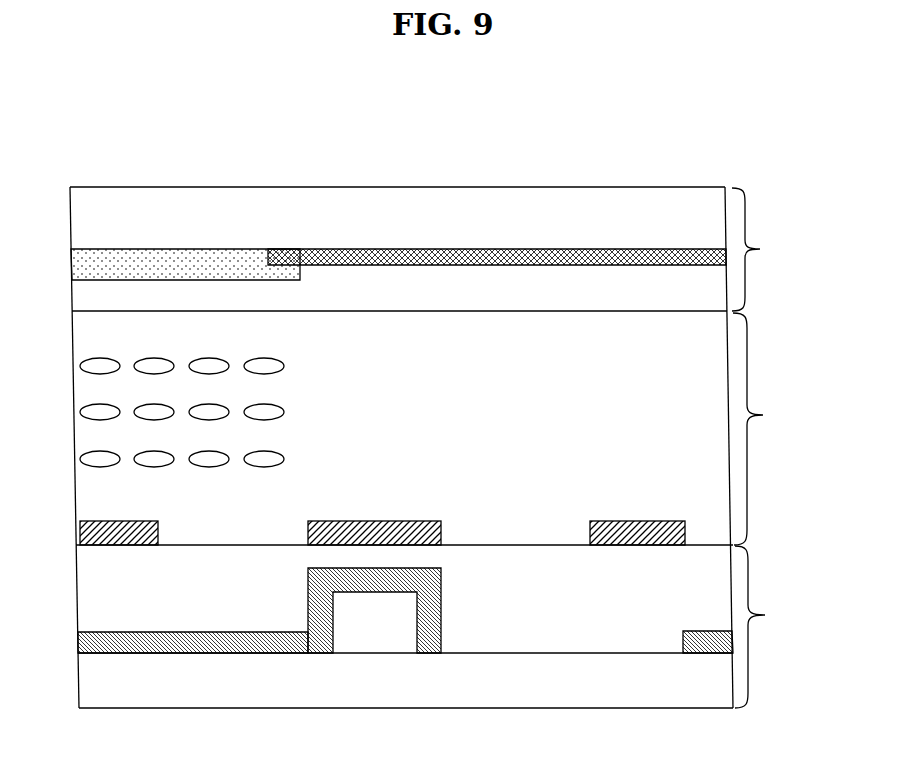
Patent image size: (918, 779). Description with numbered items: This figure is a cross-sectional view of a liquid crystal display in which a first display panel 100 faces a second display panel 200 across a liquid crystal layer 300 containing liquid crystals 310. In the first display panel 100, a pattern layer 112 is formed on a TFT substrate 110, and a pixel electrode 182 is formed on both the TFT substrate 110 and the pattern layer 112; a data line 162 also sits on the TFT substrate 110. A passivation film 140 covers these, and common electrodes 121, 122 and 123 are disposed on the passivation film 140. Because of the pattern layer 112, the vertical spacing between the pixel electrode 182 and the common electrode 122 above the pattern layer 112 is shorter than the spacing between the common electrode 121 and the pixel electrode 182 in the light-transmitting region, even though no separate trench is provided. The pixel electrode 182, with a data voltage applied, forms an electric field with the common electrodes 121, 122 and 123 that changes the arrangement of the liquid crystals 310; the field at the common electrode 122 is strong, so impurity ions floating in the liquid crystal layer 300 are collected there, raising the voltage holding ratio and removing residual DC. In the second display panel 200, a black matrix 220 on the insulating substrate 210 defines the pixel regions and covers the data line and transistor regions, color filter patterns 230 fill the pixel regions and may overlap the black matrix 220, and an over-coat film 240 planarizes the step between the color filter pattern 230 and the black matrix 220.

The first display panel 100 is at (769, 627).
The TFT substrate 110 is at (88, 678).
The pattern layer 112 is at (370, 645).
The common electrode 121 is at (93, 522).
The common electrode 122 is at (437, 522).
The common electrode 123 is at (610, 522).
The passivation film 140 is at (96, 615).
The data line 162 is at (700, 655).
The pixel electrode 182 is at (87, 640).
The second display panel 200 is at (768, 249).
The insulating substrate 210 is at (683, 202).
The black matrix 220 is at (343, 248).
The color filter pattern 230 is at (207, 252).
The over-coat film 240 is at (493, 288).
The liquid crystal layer 300 is at (768, 429).
The liquid crystals 310 is at (95, 410).